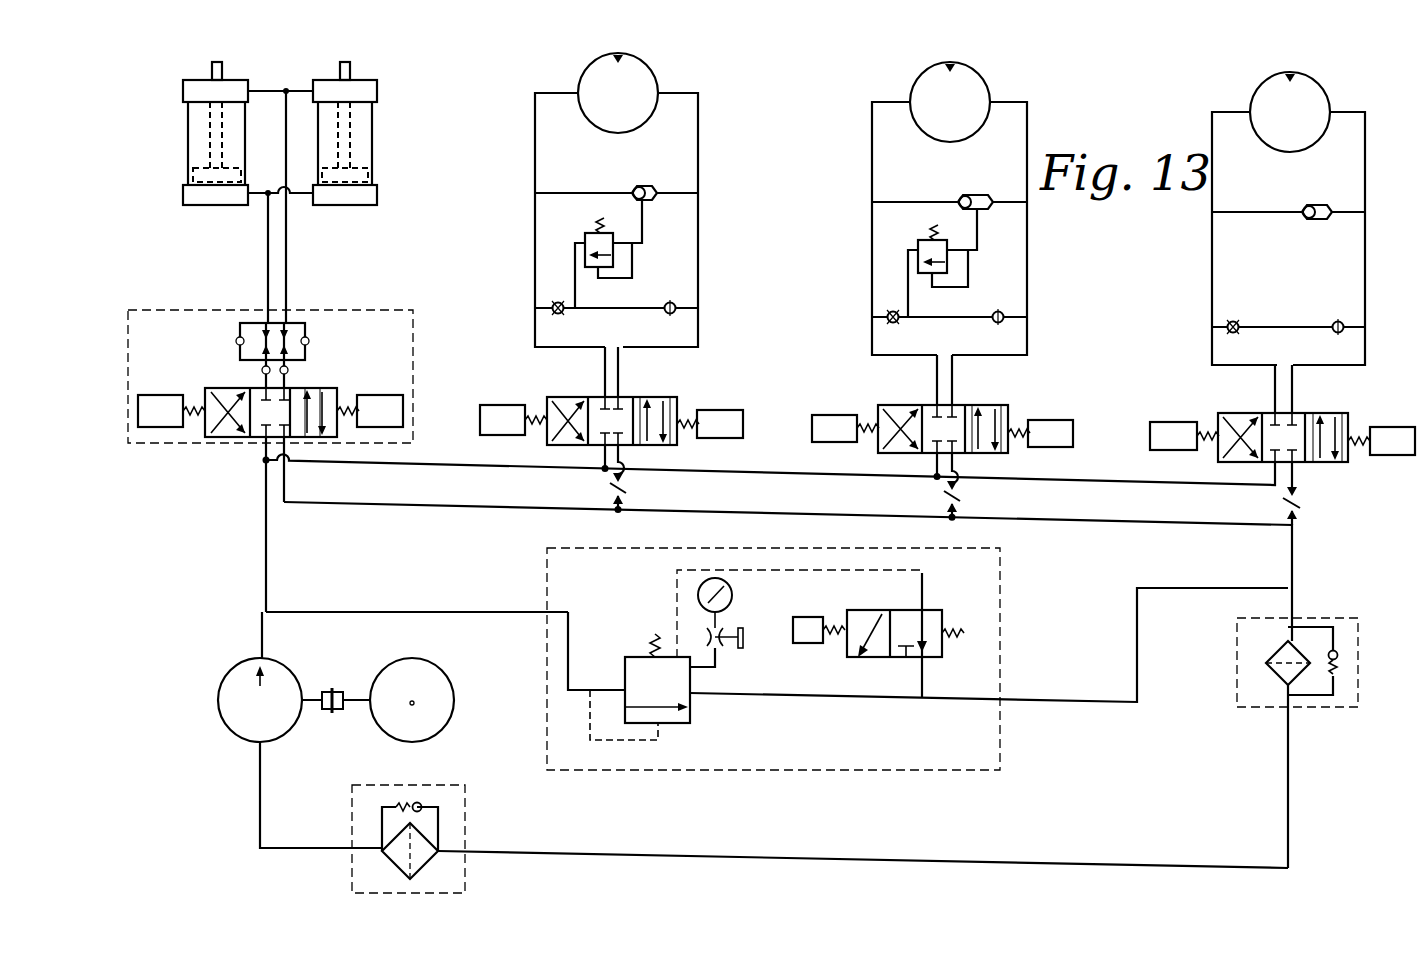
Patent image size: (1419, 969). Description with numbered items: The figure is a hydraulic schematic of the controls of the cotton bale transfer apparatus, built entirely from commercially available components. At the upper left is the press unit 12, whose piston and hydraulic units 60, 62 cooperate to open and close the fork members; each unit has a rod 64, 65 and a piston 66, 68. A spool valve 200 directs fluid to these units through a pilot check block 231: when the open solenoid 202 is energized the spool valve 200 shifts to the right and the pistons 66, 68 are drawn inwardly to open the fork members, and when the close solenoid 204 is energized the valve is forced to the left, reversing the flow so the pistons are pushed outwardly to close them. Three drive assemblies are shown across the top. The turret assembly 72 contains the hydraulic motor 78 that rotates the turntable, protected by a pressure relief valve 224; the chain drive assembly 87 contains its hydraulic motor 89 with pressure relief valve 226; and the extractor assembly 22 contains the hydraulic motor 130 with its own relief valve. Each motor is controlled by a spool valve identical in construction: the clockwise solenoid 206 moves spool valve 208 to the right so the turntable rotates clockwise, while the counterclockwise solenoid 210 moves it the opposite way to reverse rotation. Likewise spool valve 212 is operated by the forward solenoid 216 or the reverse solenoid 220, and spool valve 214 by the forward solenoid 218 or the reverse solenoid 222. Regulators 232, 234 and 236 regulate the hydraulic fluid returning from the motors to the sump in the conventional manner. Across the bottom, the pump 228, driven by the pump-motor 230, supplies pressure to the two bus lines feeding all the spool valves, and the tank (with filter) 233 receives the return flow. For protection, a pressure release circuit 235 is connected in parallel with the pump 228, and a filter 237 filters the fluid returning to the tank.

The press unit 12 is at (277, 116).
The piston and hydraulic unit 60 is at (188, 134).
The piston and hydraulic unit 62 is at (372, 133).
The piston rod 64 is at (213, 73).
The piston rod 65 is at (350, 74).
The piston 66 is at (193, 173).
The piston 68 is at (372, 176).
The pilot operated check valve block 231 is at (312, 340).
The spool valve 200 is at (322, 388).
The close solenoid 204 is at (163, 394).
The open solenoid 202 is at (392, 398).
The turret assembly 72 is at (616, 220).
The hydraulic motor 78 is at (657, 76).
The pressure relief valve 224 is at (648, 255).
The chain drive assembly 87 is at (949, 228).
The chain drive hydraulic motor 89 is at (987, 84).
The pressure relief valve 226 is at (972, 288).
The extractor assembly 22 is at (1288, 238).
The hydraulic motor 130 is at (1330, 95).
The spool valve 208 is at (565, 397).
The clockwise solenoid 206 is at (506, 404).
The counterclockwise solenoid 210 is at (722, 410).
The regulator 232 is at (630, 498).
The spool valve 212 is at (972, 405).
The forward solenoid 216 is at (834, 414).
The reverse solenoid 220 is at (1058, 420).
The regulator 234 is at (965, 501).
The spool valve 214 is at (1312, 413).
The forward solenoid 218 is at (1170, 422).
The reverse solenoid 222 is at (1388, 458).
The regulator 236 is at (1278, 505).
The pump 228 is at (228, 733).
The pump-motor 230 is at (445, 673).
The tank (with filter) 233 is at (465, 812).
The pressure relief circuit 235 is at (853, 770).
The filter 237 is at (1336, 710).